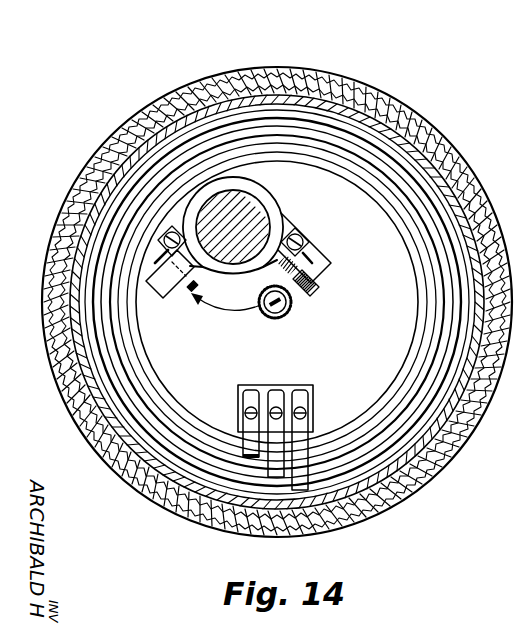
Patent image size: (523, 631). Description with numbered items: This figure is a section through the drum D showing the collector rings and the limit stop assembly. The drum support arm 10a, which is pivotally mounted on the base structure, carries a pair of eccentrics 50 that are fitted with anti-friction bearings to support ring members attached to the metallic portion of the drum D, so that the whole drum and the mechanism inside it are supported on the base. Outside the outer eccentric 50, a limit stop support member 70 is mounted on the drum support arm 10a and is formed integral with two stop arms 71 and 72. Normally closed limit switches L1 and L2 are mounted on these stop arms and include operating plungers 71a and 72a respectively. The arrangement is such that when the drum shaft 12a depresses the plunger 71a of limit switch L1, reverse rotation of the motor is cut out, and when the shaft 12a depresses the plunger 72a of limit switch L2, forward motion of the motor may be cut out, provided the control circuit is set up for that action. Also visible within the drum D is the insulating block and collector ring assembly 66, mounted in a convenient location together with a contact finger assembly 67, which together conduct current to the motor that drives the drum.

The drum D is at (300, 62).
The insulating block and collector ring assembly 66 is at (367, 162).
The eccentrics 50 is at (402, 331).
The drum support arm 10a is at (256, 213).
The limit stop support member 70 is at (279, 218).
The stop arm 72 is at (173, 298).
The operating plunger 72a is at (197, 287).
The limit switch L2 is at (166, 303).
The stop arm 71 is at (316, 292).
The operating plunger 71a is at (297, 303).
The limit switch L1 is at (322, 257).
The drum shaft 12a is at (268, 316).
The contact finger assembly 67 is at (278, 388).